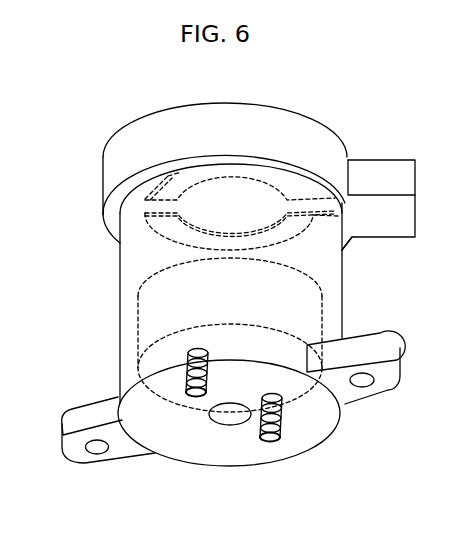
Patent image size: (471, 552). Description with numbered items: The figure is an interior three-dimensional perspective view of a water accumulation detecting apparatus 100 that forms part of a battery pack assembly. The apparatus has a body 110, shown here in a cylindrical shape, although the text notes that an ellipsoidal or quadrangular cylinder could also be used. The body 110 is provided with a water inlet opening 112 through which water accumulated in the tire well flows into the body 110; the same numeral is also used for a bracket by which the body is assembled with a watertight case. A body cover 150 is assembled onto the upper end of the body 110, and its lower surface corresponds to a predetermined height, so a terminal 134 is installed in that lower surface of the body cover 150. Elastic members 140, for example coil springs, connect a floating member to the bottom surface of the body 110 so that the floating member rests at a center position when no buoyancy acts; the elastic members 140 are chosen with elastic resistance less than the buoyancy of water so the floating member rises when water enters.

The water accumulation detecting apparatus 100 is at (92, 308).
The body 110 is at (343, 288).
The water inlet opening 112 is at (230, 425).
The terminal 134 is at (168, 227).
The elastic member 140 is at (188, 384).
The body cover 150 is at (107, 178).